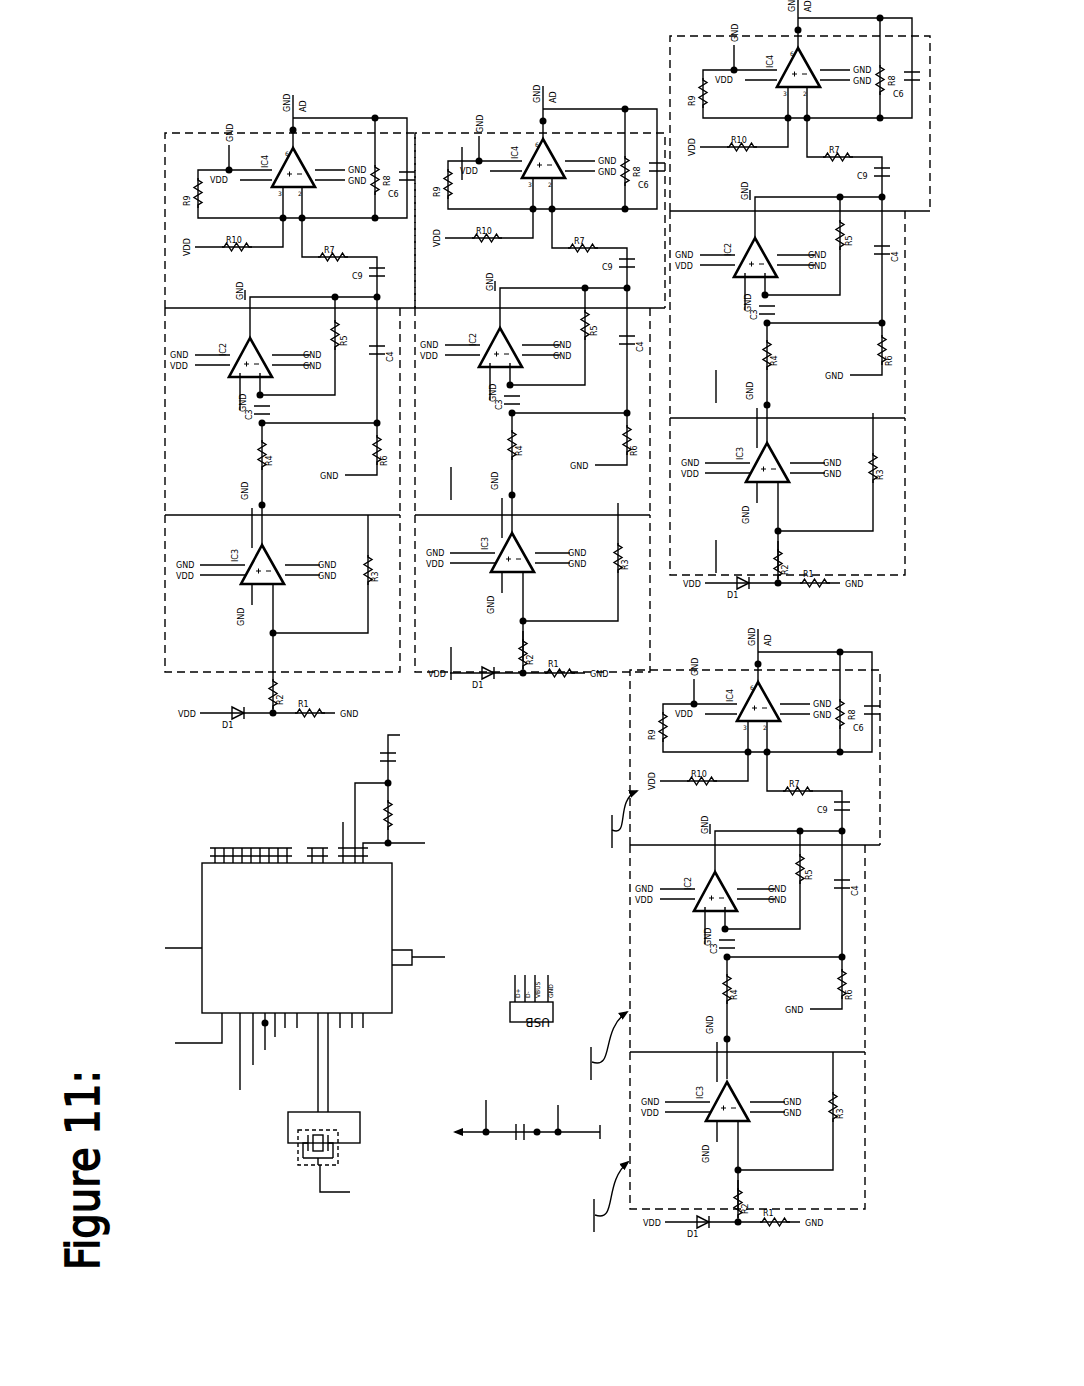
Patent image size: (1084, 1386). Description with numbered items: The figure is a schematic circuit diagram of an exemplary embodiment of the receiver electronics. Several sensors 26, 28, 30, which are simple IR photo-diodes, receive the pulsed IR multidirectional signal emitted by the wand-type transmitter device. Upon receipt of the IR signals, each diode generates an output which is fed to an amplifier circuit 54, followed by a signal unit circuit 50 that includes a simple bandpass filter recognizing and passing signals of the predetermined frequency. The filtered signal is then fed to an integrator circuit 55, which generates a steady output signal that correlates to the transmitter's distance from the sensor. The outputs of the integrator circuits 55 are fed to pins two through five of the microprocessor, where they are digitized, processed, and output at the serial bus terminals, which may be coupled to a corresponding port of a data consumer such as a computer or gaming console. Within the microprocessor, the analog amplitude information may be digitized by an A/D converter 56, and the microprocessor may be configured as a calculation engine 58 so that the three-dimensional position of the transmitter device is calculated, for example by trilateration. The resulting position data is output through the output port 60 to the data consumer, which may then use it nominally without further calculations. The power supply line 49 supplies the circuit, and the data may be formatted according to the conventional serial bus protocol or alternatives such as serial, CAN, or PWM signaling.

The sensor 26 is at (307, 980).
The sensor 28 is at (488, 714).
The sensor 30 is at (722, 606).
The power supply line 49 is at (498, 1047).
The signal unit circuit 50 is at (160, 457).
The amplifier circuit 54 is at (160, 639).
The integrator circuit 55 is at (160, 263).
The A/D converter 56 is at (324, 1127).
The calculation engine 58 is at (326, 1165).
The output port 60 is at (203, 1084).